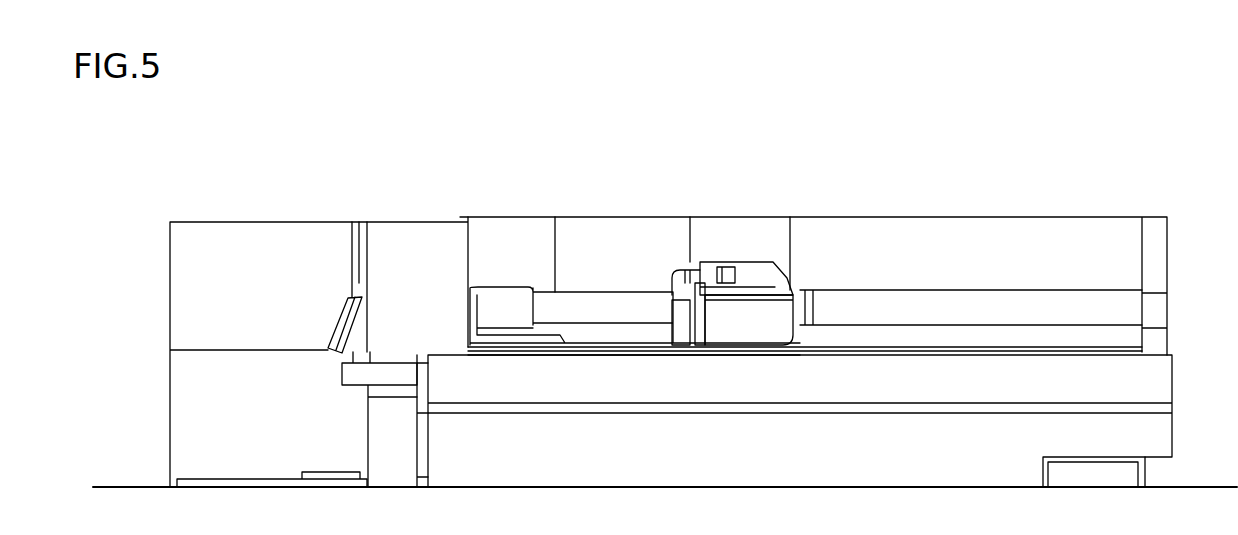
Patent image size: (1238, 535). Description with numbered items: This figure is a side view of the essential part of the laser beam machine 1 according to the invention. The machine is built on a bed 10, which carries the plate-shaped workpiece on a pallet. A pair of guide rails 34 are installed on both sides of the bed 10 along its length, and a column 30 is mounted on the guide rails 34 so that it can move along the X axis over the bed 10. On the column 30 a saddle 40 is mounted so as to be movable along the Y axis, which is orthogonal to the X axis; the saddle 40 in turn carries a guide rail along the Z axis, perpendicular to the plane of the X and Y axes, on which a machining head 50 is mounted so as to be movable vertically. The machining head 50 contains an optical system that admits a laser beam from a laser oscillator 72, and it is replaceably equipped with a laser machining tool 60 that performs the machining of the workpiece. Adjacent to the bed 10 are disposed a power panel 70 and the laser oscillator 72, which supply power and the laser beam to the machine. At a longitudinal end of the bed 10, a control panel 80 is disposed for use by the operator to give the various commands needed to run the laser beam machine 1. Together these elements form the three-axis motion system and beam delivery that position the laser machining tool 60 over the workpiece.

The laser beam machine 1 is at (970, 191).
The bed 10 is at (764, 452).
The column 30 is at (785, 313).
The guide rails 34 is at (888, 356).
The saddle 40 is at (752, 266).
The machining head 50 is at (672, 300).
The laser machining tool 60 is at (677, 353).
The power panel 70 is at (213, 231).
The laser oscillator 72 is at (708, 230).
The control panel 80 is at (348, 296).